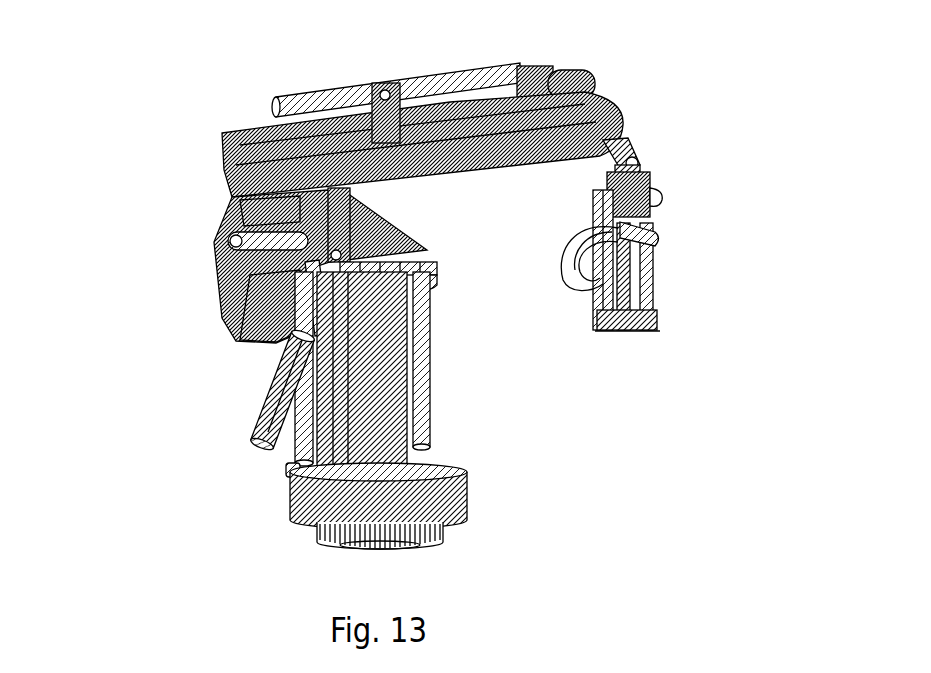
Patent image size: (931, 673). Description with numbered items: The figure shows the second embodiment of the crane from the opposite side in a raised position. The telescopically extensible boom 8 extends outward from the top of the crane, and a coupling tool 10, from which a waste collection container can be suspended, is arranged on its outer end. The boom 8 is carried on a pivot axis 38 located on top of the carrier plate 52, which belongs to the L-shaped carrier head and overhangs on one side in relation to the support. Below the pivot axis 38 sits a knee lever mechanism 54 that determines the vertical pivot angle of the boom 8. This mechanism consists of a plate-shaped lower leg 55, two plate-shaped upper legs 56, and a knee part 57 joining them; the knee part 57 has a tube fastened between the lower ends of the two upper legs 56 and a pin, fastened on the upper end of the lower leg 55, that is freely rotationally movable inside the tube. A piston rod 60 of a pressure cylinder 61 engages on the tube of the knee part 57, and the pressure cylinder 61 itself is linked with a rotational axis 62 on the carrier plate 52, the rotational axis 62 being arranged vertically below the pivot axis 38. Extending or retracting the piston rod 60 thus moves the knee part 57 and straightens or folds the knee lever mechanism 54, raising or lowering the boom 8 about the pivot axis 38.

The boom 8 is at (418, 123).
The coupling tool 10 is at (637, 265).
The pivot axis 38 is at (270, 212).
The carrier plate 52 is at (246, 298).
The knee lever mechanism 54 is at (280, 306).
The lower leg 55 is at (262, 248).
The upper legs 56 is at (347, 218).
The knee part 57 is at (343, 262).
The piston rod 60 is at (320, 303).
The pressure cylinder 61 is at (283, 391).
The rotational axis 62 is at (310, 337).